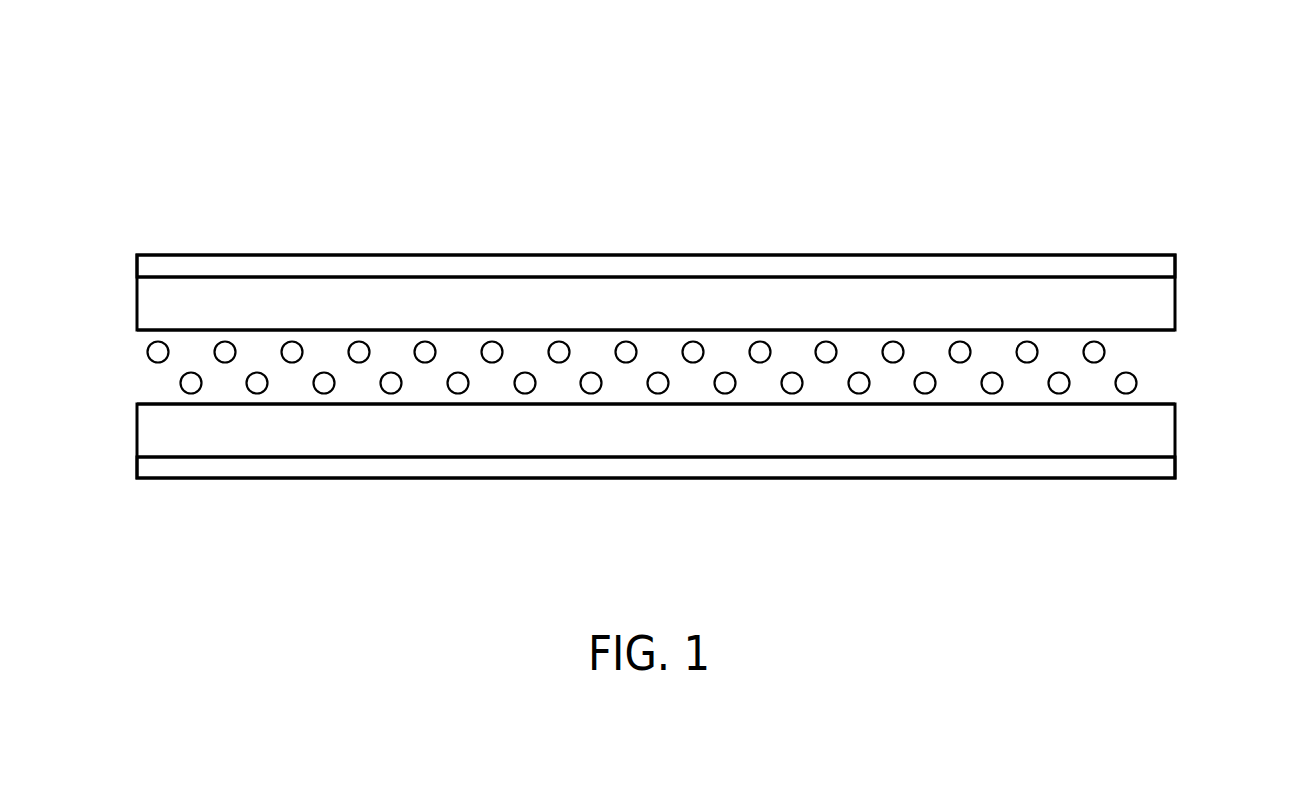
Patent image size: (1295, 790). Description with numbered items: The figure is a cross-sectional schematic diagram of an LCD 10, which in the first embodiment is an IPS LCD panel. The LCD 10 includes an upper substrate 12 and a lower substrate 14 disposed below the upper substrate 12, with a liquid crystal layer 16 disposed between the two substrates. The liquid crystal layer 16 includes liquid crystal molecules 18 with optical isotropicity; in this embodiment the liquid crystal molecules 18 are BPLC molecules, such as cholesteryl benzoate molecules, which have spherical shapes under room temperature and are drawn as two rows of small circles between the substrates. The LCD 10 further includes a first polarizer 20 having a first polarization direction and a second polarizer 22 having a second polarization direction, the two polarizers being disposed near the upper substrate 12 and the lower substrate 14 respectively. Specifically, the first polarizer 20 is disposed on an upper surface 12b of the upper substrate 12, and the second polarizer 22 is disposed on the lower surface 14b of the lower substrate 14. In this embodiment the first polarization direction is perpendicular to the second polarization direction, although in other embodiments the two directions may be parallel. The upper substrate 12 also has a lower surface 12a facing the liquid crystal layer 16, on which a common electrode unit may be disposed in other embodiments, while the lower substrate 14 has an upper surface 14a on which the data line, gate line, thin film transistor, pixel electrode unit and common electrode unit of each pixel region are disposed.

The LCD 10 is at (1115, 92).
The upper substrate 12 is at (1137, 308).
The lower surface of the upper substrate 12a is at (157, 328).
The upper surface of the upper substrate 12b is at (157, 275).
The lower substrate 14 is at (1137, 428).
The upper surface of the lower substrate 14a is at (157, 404).
The lower surface of the lower substrate 14b is at (157, 457).
The liquid crystal layer 16 is at (666, 366).
The liquid crystal molecules 18 is at (158, 352).
The first polarizer 20 is at (1147, 265).
The second polarizer 22 is at (1150, 467).